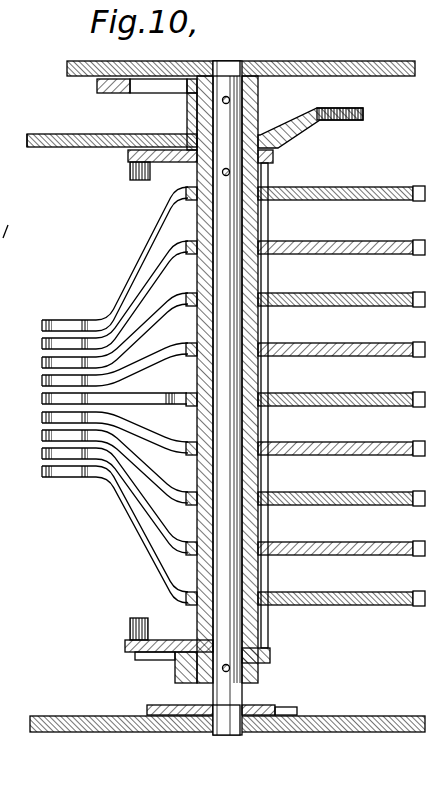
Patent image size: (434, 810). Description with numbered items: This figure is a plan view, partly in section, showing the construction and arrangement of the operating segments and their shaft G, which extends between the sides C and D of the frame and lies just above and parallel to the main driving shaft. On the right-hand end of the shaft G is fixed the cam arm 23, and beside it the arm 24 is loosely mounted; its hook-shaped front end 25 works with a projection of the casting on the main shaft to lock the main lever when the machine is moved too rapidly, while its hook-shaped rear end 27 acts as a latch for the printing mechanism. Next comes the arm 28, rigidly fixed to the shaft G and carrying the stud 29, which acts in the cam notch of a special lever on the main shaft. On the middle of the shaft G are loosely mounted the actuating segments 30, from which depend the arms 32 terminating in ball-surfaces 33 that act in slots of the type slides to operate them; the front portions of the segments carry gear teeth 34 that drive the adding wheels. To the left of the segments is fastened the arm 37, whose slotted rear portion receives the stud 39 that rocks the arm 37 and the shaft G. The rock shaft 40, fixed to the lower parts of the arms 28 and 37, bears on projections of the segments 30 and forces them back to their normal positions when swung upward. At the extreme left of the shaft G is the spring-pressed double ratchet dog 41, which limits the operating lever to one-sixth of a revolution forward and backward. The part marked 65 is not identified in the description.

The side C is at (379, 64).
The side D is at (359, 716).
The shaft G is at (222, 428).
The cam arm 23 is at (155, 87).
The arm 24 is at (119, 134).
The front end 25 is at (348, 112).
The rear end 27 is at (14, 141).
The arm 28 is at (275, 159).
The stud 29 is at (129, 175).
The actuating segments 30 is at (352, 216).
The arms 32 is at (152, 290).
The ball-surfaces 33 is at (40, 430).
The gear teeth 34 is at (422, 241).
The arm 37 is at (182, 640).
The stud 39 is at (129, 620).
The rock shaft 40 is at (269, 172).
The double ratchet pawl or dog 41 is at (173, 705).
The reference 65 is at (18, 227).